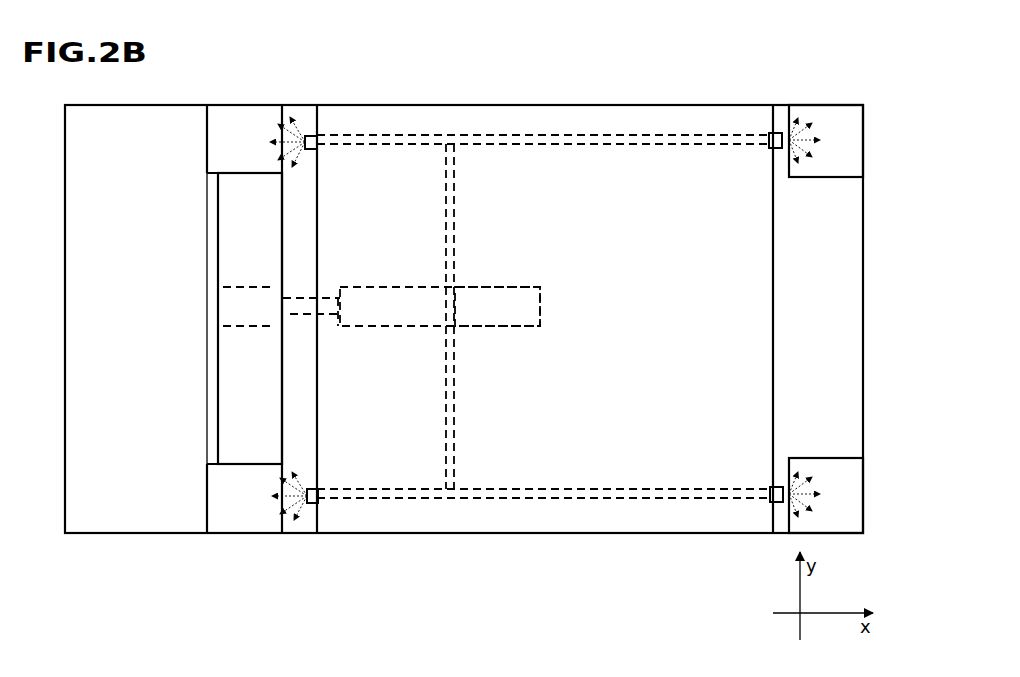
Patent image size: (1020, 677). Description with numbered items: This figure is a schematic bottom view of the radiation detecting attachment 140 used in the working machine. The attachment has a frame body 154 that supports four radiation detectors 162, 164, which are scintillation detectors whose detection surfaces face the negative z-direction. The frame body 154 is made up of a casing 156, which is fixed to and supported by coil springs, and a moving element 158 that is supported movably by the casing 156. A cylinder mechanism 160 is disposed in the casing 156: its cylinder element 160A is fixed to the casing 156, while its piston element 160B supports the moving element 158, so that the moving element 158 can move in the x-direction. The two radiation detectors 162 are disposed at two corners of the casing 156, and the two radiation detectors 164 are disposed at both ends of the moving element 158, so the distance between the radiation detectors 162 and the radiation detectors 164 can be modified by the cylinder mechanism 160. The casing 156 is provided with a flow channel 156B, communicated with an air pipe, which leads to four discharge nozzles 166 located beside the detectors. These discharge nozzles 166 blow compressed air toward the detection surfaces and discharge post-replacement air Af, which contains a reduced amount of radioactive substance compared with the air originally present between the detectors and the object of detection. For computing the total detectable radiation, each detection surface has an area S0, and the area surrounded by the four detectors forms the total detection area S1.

The radiation detecting attachment 140 is at (683, 62).
The frame body 154 is at (603, 90).
The casing 156 is at (723, 229).
The flow channel 156B is at (481, 146).
The moving element 158 is at (269, 382).
The cylinder mechanism 160 is at (482, 322).
The cylinder element 160A is at (527, 313).
The piston element 160B is at (326, 302).
The radiation detector 162 is at (855, 153).
The radiation detector 164 is at (232, 150).
The discharge nozzle 166 is at (307, 136).
The area of detection surface S0 is at (220, 112).
The total detection area S1 is at (236, 258).
The post-replacement air Af is at (538, 318).